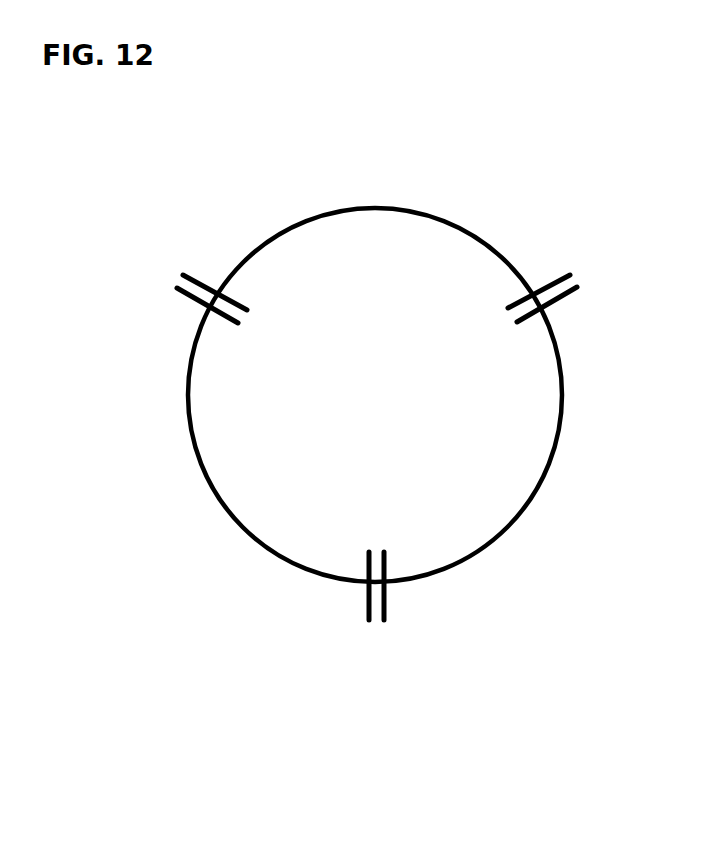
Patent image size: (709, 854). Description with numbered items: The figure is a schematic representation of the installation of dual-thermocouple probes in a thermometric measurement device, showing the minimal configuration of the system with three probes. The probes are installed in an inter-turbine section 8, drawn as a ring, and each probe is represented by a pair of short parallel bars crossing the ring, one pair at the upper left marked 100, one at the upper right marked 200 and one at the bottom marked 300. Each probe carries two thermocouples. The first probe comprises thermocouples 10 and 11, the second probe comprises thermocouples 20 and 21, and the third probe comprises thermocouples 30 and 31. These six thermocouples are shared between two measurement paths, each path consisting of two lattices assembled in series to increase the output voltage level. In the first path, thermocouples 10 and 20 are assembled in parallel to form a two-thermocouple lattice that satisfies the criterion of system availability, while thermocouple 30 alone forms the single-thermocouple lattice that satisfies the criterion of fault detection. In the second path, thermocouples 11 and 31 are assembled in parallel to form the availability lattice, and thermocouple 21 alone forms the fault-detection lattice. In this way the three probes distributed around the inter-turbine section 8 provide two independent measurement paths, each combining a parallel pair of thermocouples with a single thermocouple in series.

The inter-turbine section 8 is at (375, 395).
The thermocouple 10 is at (188, 300).
The thermocouple 11 is at (200, 280).
The first coupling portion 100 is at (189, 284).
The thermocouple 20 is at (552, 278).
The thermocouple 21 is at (562, 298).
The second coupling portion 200 is at (564, 283).
The thermocouple 30 is at (390, 603).
The thermocouple 31 is at (362, 603).
The third coupling portion 300 is at (377, 603).